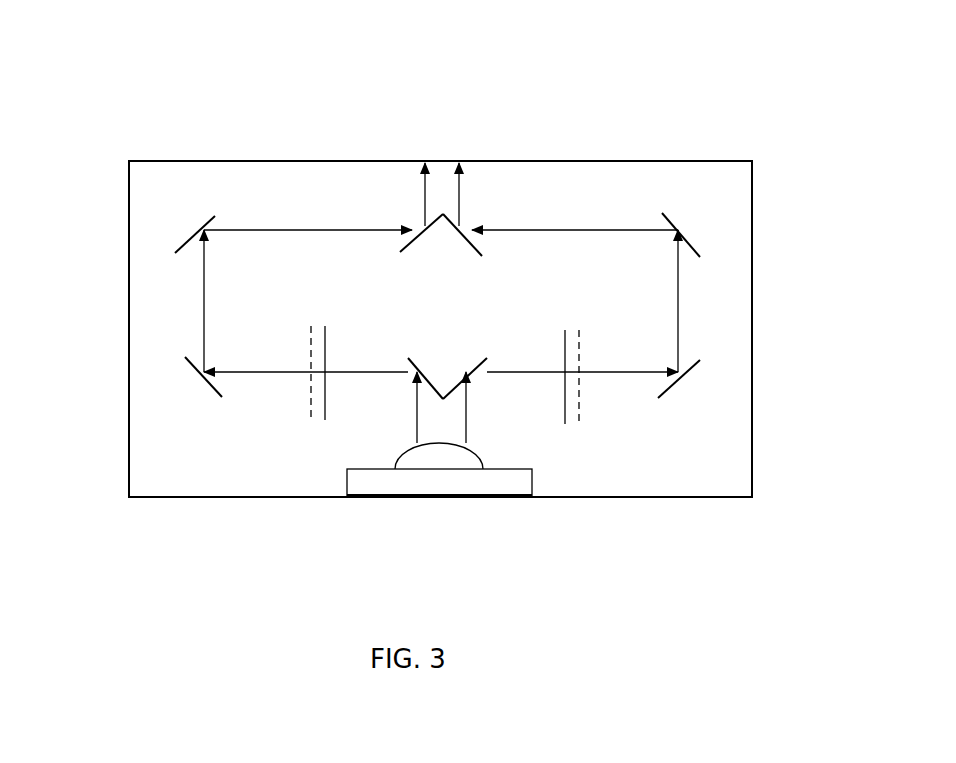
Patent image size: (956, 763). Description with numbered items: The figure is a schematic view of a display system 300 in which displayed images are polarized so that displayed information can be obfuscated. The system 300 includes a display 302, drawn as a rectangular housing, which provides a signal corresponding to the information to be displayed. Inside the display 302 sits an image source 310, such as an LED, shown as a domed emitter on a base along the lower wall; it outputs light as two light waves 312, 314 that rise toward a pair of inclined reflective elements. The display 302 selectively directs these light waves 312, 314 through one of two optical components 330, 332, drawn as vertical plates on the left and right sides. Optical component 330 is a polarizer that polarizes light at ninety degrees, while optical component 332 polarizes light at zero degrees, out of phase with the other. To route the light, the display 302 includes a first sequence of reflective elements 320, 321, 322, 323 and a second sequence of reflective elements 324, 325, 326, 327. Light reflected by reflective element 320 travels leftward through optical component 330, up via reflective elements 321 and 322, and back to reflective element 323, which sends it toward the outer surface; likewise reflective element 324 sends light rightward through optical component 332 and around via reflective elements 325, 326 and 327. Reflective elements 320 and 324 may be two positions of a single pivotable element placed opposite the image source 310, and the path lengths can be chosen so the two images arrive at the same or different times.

The system 300 is at (313, 97).
The display 302 is at (577, 170).
The image source 310 is at (460, 487).
The light wave 312 is at (243, 373).
The light wave 314 is at (630, 372).
The reflective element 320 is at (412, 357).
The reflective element 321 is at (193, 368).
The reflective element 322 is at (185, 240).
The reflective element 323 is at (420, 222).
The reflective element 324 is at (478, 357).
The reflective element 325 is at (690, 373).
The reflective element 326 is at (673, 223).
The reflective element 327 is at (465, 223).
The optical component 330 is at (313, 420).
The optical component 332 is at (570, 425).